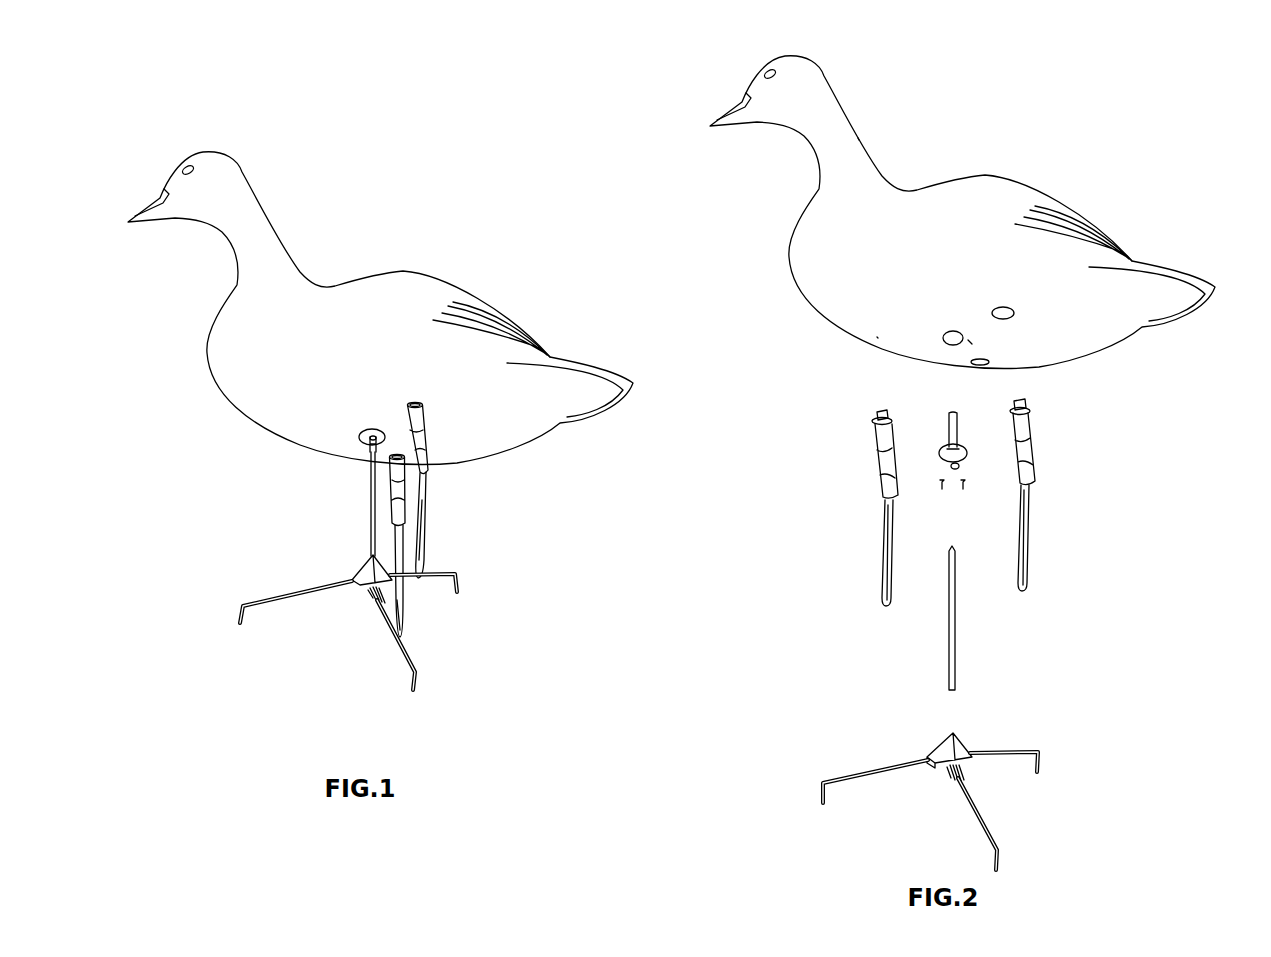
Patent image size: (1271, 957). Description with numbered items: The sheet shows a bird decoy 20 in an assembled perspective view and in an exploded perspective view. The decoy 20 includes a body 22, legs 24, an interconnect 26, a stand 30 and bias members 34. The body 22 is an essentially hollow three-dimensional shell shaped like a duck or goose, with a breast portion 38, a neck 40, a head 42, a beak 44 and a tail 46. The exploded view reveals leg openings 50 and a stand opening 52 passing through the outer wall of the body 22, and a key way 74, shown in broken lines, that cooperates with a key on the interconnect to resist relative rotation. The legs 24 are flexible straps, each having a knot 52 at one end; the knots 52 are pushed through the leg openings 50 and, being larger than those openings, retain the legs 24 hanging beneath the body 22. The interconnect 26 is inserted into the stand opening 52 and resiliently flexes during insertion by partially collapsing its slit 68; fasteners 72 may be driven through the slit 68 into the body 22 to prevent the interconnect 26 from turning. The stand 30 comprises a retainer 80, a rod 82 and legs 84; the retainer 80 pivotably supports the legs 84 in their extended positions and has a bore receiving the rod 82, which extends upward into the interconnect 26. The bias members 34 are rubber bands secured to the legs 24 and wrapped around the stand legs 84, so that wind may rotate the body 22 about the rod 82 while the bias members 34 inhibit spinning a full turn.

In FIG. 1, the decoy 20 is at (182, 143).
In FIG. 2, the decoy 20 is at (1040, 105).
In FIG. 1, the body 22 is at (430, 273).
In FIG. 2, the body 22 is at (1007, 175).
In FIG. 1, the legs 24 is at (393, 453).
In FIG. 2, the legs 24 is at (883, 465).
In FIG. 1, the interconnect 26 is at (370, 438).
In FIG. 2, the interconnect 26 is at (942, 412).
In FIG. 1, the stand 30 is at (293, 587).
In FIG. 2, the stand 30 is at (1008, 747).
In FIG. 1, the bias members 34 is at (422, 527).
In FIG. 2, the bias members 34 is at (882, 553).
In FIG. 2, the breast portion 38 is at (877, 337).
In FIG. 2, the neck 40 is at (858, 138).
In FIG. 1, the head 42 is at (238, 168).
In FIG. 2, the head 42 is at (807, 63).
In FIG. 1, the beak 44 is at (138, 207).
In FIG. 2, the beak 44 is at (720, 110).
In FIG. 1, the tail 46 is at (610, 363).
In FIG. 2, the tail 46 is at (1190, 267).
In FIG. 1, the leg openings 50 is at (397, 455).
In FIG. 2, the leg openings 50 is at (1013, 308).
In FIG. 2, the stand opening 52 is at (947, 332).
In FIG. 2, the slit 68 is at (950, 437).
In FIG. 2, the fasteners 72 is at (942, 492).
In FIG. 2, the key way 74 is at (970, 343).
In FIG. 1, the retainer 80 is at (353, 587).
In FIG. 2, the retainer 80 is at (962, 740).
In FIG. 1, the rod 82 is at (372, 478).
In FIG. 2, the rod 82 is at (955, 633).
In FIG. 1, the legs 84 is at (435, 573).
In FIG. 2, the legs 84 is at (855, 773).